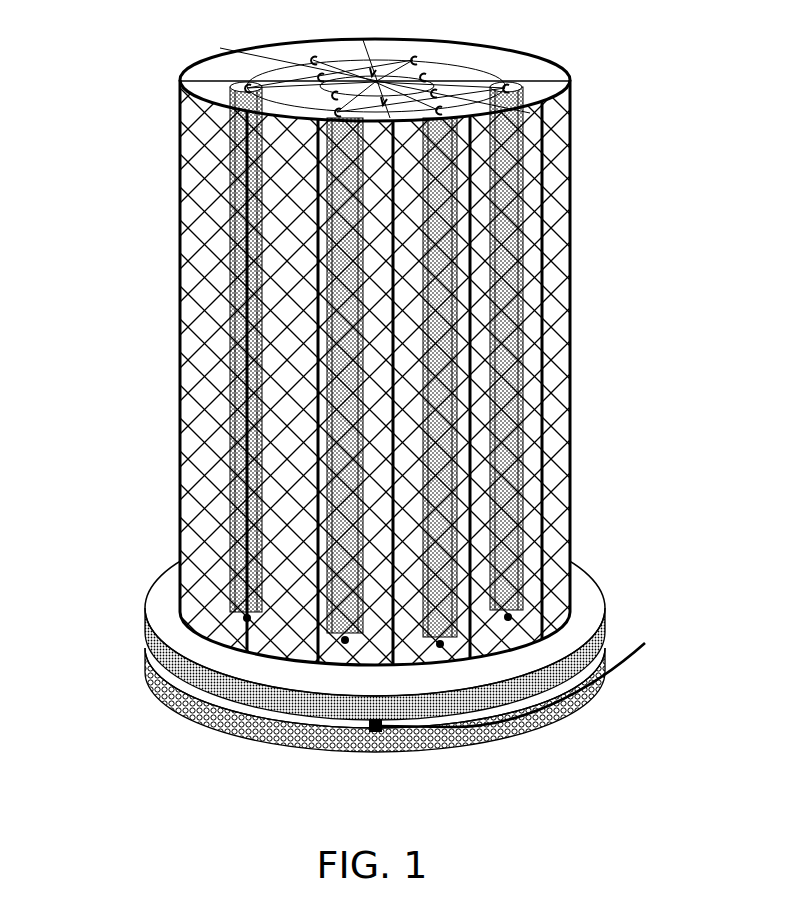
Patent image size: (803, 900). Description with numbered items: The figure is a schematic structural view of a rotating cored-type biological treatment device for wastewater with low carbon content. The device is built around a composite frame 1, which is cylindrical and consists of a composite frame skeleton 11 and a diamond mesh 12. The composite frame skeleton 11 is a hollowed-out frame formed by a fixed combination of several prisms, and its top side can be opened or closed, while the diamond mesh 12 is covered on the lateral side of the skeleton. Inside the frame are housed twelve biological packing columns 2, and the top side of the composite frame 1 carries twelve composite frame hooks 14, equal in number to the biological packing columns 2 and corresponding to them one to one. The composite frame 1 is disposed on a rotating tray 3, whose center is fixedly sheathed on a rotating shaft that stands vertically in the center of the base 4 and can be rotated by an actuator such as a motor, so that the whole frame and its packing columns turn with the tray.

The composite frame 1 is at (373, 349).
The biological packing column 2 is at (542, 195).
The rotating tray 3 is at (147, 623).
The base 4 is at (187, 710).
The composite frame skeleton 11 is at (230, 340).
The diamond mesh 12 is at (203, 395).
The composite frame hook 14 is at (510, 84).